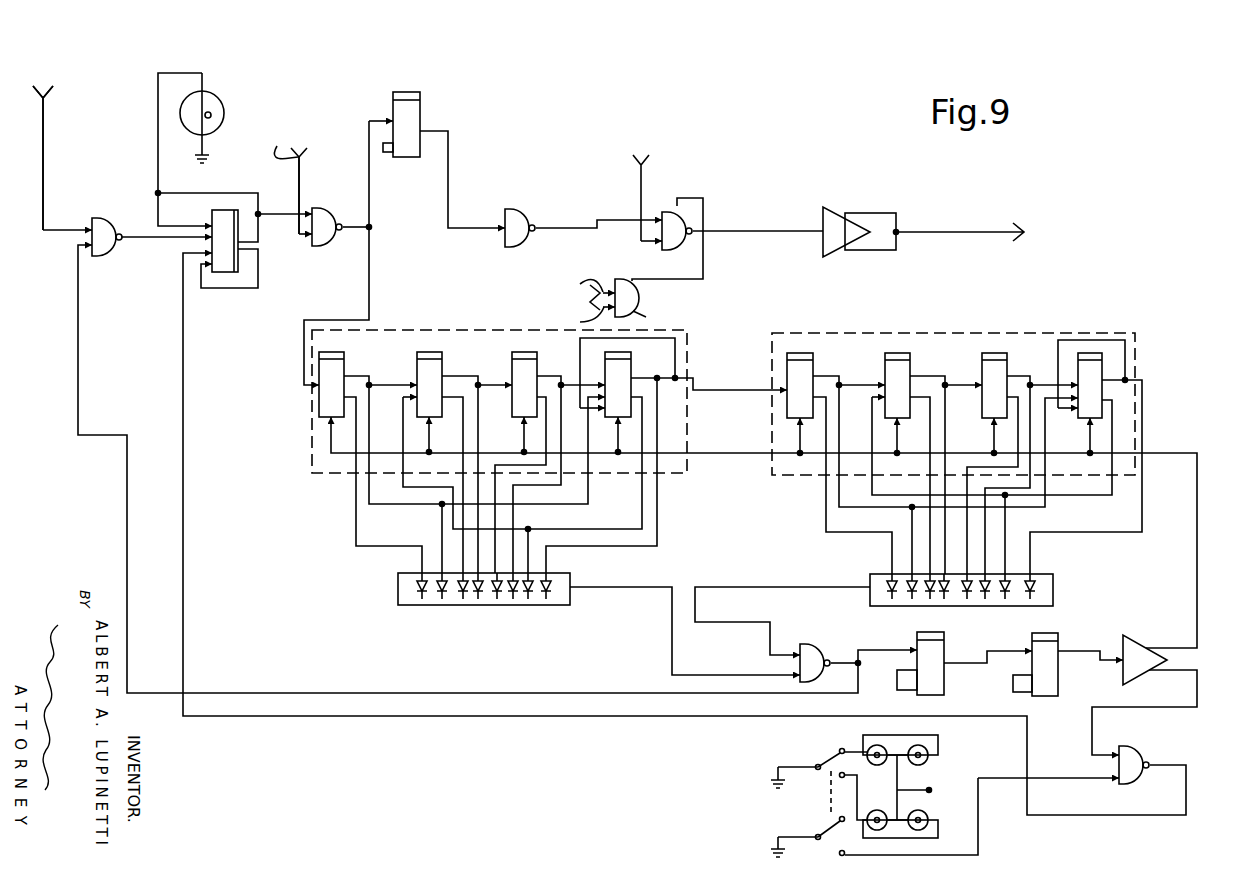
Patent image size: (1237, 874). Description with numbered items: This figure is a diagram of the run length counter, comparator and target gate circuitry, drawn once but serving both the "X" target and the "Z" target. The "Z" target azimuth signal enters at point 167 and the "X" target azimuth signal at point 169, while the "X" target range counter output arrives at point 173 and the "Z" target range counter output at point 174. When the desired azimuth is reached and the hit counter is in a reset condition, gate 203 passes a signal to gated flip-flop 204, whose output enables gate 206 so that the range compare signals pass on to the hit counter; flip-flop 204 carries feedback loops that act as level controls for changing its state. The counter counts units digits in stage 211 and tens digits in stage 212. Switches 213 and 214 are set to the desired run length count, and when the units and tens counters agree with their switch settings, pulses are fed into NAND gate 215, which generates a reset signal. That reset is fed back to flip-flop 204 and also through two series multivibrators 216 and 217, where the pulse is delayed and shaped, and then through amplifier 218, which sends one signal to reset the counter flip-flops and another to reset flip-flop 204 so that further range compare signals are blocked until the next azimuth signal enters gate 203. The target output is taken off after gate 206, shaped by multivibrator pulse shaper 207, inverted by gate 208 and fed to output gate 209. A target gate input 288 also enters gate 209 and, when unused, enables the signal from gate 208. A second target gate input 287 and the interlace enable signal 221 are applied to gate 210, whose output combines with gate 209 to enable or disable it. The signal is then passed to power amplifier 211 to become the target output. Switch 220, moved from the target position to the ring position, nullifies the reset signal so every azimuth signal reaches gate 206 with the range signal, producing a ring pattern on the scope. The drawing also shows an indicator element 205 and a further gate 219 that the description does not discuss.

The "Z" target azimuth input point 167 is at (75, 140).
The "X" target azimuth input point 169 is at (76, 150).
The "X" target range counter output point 173 is at (315, 143).
The "Z" target range counter output point 174 is at (327, 102).
The gate 203 is at (121, 200).
The gated flip-flop 204 is at (216, 219).
The indicator lamp 205 is at (212, 102).
The gate 206 is at (326, 211).
The multivibrator pulse shaper 207 is at (415, 110).
The inversion gate 208 is at (518, 211).
The output gate 209 is at (668, 211).
The gate 210 is at (663, 301).
The units hit counter / power amplifier 211 is at (840, 212).
The tens hit counter 212 is at (840, 339).
The units switch 213 is at (408, 578).
The tens switch 214 is at (880, 578).
The NAND gate 215 is at (820, 650).
The multivibrator 216 is at (938, 650).
The multivibrator 217 is at (1052, 655).
The amplifier 218 is at (1136, 656).
The NAND gate 219 is at (1117, 765).
The switch 220 is at (777, 791).
The "X" target interlace enable signal input 221 is at (575, 290).
The second "X" target gate input 287 is at (575, 317).
The "X" target gate input 288 is at (652, 158).